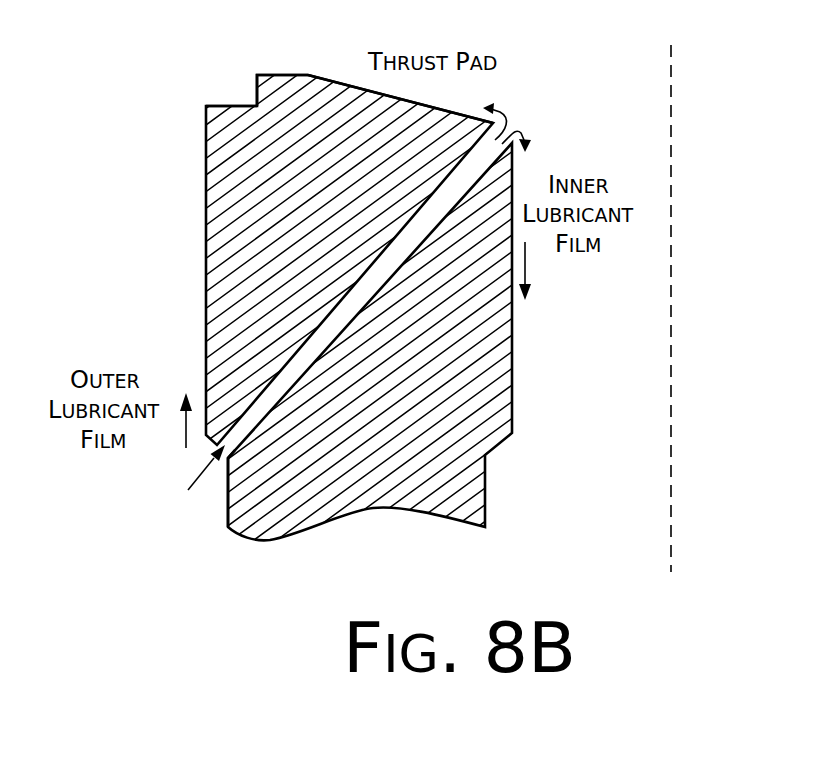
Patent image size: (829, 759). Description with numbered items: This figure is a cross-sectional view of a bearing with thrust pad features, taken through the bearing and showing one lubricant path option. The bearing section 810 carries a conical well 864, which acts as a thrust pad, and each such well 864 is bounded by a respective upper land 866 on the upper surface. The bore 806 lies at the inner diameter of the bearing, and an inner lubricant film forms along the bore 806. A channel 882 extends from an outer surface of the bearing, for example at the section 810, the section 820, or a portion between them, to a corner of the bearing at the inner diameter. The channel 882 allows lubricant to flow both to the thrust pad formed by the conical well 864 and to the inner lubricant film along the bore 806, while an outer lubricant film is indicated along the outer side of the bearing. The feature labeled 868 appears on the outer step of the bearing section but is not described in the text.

The bearing section 810 is at (206, 226).
The outer step surface of thrust pad 868 is at (221, 104).
The upper land 866 is at (290, 74).
The well 864 is at (347, 83).
The bore 806 is at (511, 347).
The section 820 is at (237, 500).
The channel 882 is at (530, 104).